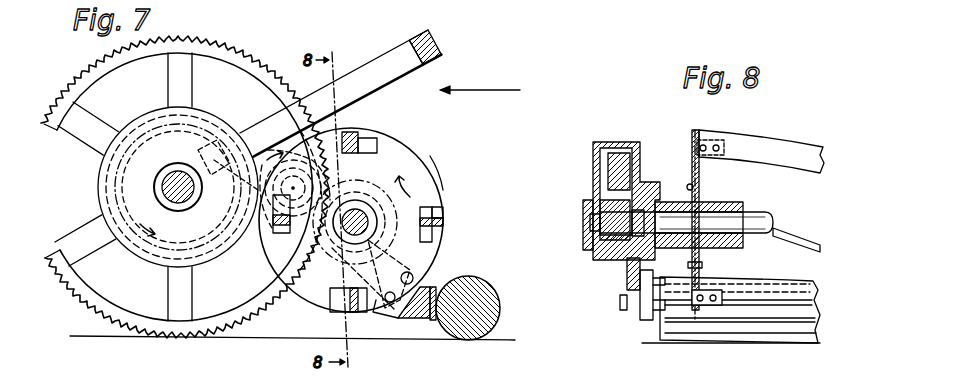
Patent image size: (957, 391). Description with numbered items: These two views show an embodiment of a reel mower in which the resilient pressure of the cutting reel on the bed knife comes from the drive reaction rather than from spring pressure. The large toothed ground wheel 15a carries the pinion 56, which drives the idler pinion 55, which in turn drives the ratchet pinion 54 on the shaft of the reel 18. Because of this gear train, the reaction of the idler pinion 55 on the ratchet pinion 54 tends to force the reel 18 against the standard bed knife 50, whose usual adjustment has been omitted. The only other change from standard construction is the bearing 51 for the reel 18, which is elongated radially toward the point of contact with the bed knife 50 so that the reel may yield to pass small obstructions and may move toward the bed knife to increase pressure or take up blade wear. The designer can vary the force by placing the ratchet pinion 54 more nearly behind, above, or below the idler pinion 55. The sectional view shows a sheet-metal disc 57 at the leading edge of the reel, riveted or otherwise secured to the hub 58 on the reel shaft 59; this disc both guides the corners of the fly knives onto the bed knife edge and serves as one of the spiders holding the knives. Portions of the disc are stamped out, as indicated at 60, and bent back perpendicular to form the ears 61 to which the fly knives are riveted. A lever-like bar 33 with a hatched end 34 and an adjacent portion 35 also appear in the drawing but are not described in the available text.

In FIG. 7, the toothed drive gear 15a is at (232, 330).
In FIG. 7, the pinion 56 is at (204, 142).
In FIG. 7, the lever bar 33 is at (506, 2).
In FIG. 7, the lever end 34 is at (537, 1).
In FIG. 7, the lever portion 35 is at (449, 32).
In FIG. 7, the reel 18 is at (372, 160).
In FIG. 7, the disc 57 is at (443, 184).
In FIG. 8, the disc 57 is at (700, 166).
In FIG. 7, the stamped-out portions 60 is at (432, 237).
In FIG. 7, the bearing 51 is at (372, 275).
In FIG. 8, the bearing 51 is at (664, 203).
In FIG. 7, the bed knife 50 is at (401, 312).
In FIG. 8, the idler pinion 55 is at (602, 176).
In FIG. 8, the ratchet pinion 54 is at (614, 246).
In FIG. 8, the hub 58 is at (700, 197).
In FIG. 8, the reel shaft 59 is at (765, 215).
In FIG. 8, the ears 61 is at (718, 292).